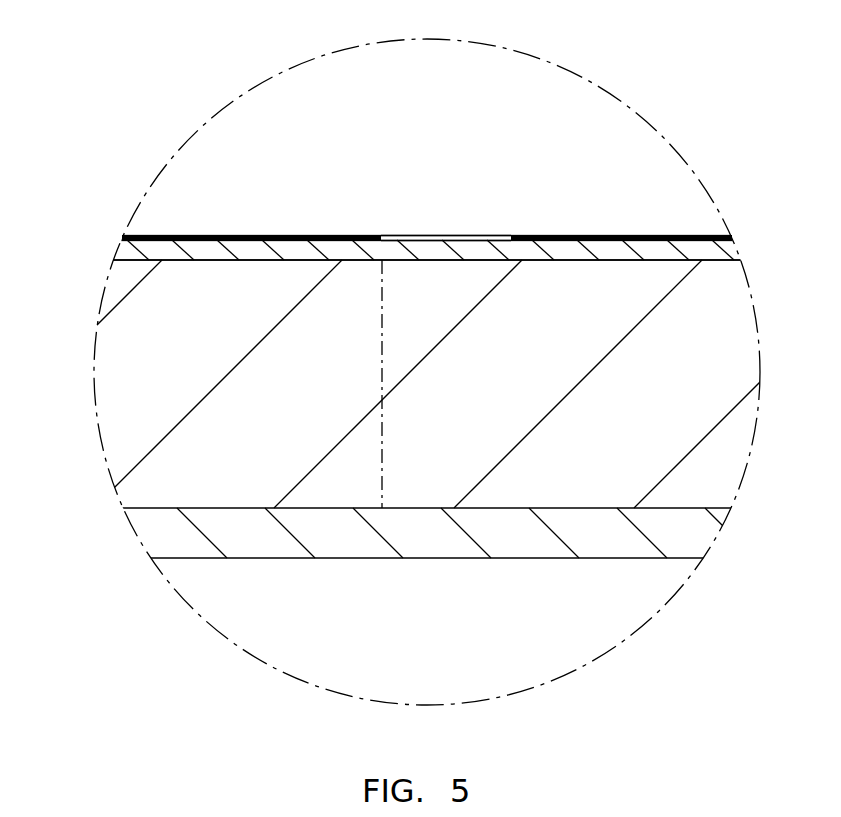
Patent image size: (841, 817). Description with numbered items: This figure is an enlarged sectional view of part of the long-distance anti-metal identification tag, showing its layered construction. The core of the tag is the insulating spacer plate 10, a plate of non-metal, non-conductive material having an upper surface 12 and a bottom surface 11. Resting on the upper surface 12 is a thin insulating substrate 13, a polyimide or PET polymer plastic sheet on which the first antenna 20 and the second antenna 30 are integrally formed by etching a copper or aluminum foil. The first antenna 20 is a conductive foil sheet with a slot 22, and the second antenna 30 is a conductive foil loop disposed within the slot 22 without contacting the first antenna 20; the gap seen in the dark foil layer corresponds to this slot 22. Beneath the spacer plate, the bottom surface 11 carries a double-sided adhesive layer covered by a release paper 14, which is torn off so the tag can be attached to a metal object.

The insulating spacer plate 10 is at (155, 397).
The bottom surface 11 is at (225, 508).
The upper surface 12 is at (210, 236).
The insulating substrate 13 is at (697, 251).
The release paper 14 is at (268, 540).
The first antenna 20 is at (293, 236).
The slot 22 is at (453, 236).
The second antenna 30 is at (600, 236).